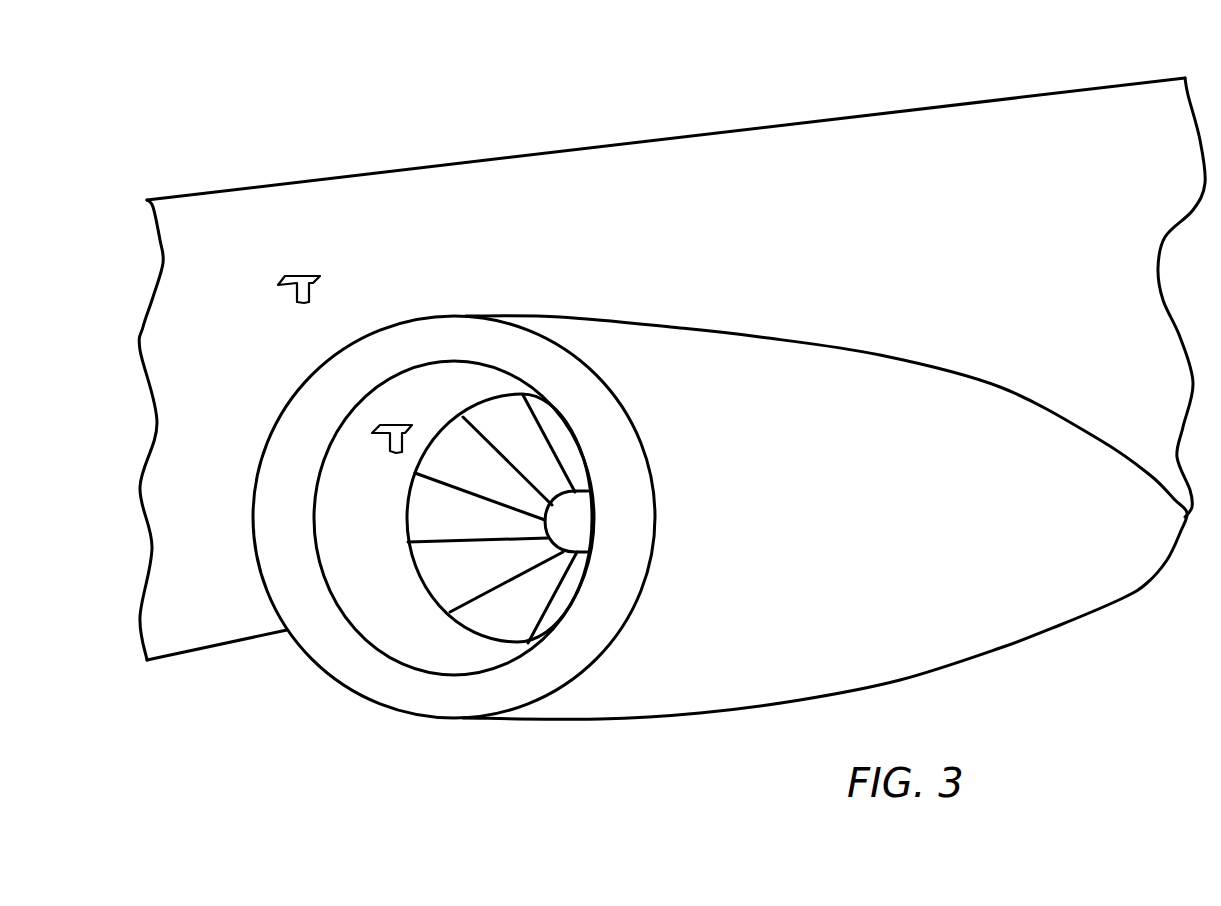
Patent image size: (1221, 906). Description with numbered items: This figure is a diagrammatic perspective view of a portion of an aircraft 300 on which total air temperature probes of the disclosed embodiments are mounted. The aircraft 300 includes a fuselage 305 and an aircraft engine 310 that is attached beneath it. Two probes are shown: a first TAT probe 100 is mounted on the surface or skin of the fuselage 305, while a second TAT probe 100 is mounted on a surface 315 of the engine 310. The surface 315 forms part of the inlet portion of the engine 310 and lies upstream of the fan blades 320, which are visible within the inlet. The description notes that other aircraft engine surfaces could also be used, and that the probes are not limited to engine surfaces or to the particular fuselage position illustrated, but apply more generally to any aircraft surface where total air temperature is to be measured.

The aircraft 300 is at (656, 420).
The fuselage 305 is at (550, 192).
The aircraft engine 310 is at (785, 340).
The surface 315 is at (405, 642).
The fan blades 320 is at (512, 603).
The TAT probe 100 is at (312, 296).